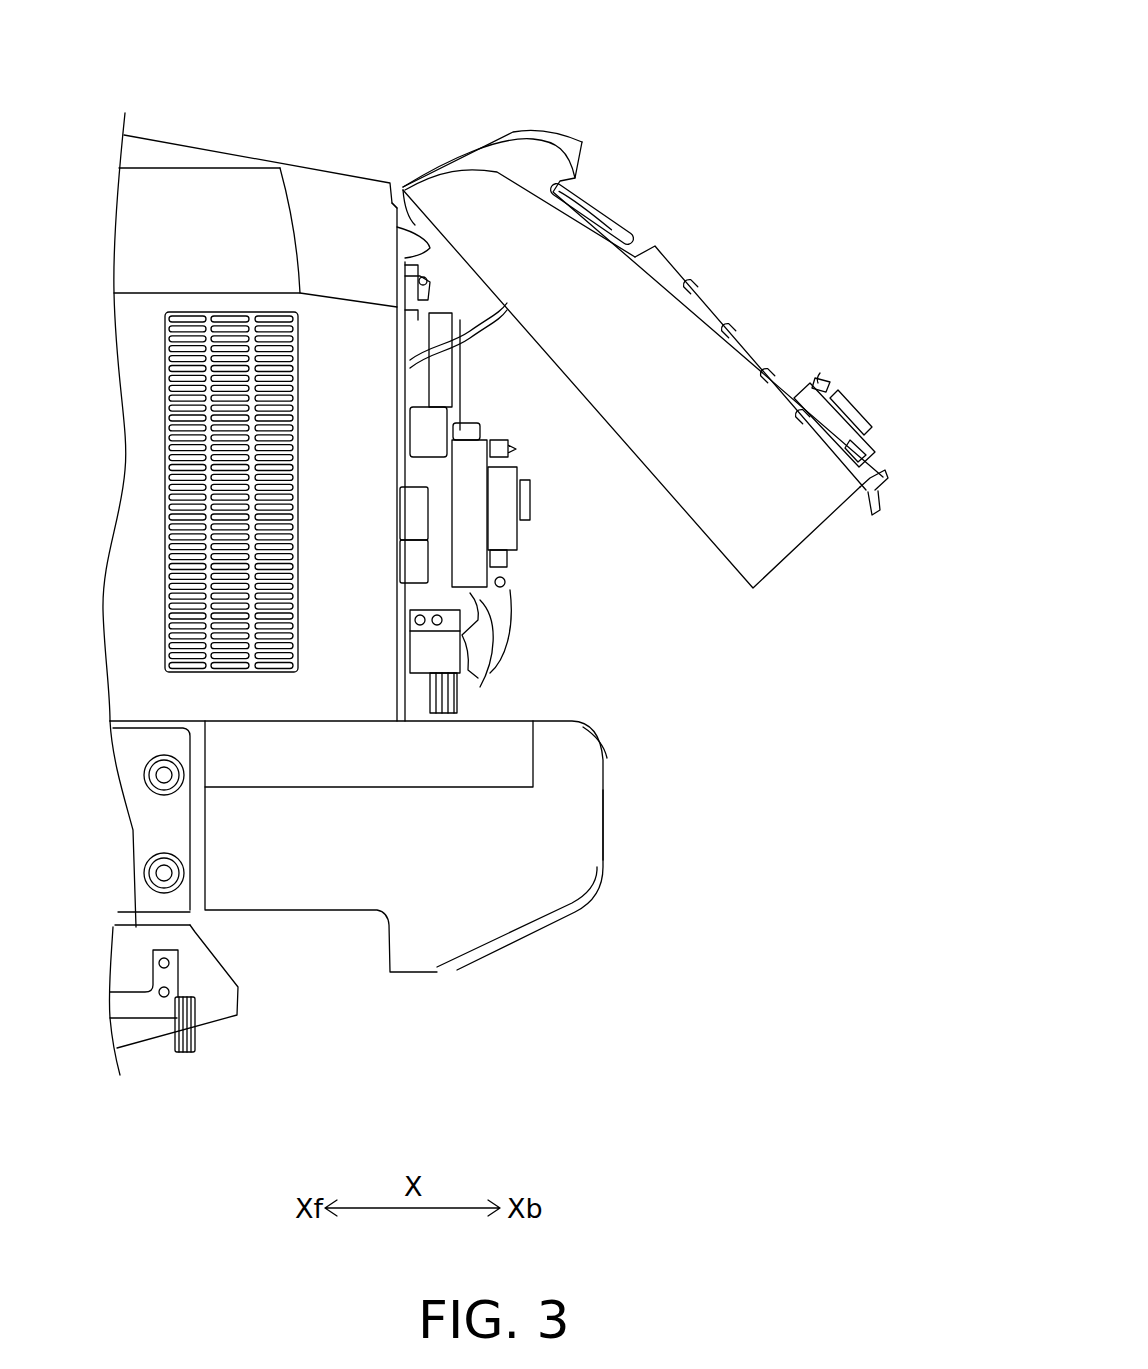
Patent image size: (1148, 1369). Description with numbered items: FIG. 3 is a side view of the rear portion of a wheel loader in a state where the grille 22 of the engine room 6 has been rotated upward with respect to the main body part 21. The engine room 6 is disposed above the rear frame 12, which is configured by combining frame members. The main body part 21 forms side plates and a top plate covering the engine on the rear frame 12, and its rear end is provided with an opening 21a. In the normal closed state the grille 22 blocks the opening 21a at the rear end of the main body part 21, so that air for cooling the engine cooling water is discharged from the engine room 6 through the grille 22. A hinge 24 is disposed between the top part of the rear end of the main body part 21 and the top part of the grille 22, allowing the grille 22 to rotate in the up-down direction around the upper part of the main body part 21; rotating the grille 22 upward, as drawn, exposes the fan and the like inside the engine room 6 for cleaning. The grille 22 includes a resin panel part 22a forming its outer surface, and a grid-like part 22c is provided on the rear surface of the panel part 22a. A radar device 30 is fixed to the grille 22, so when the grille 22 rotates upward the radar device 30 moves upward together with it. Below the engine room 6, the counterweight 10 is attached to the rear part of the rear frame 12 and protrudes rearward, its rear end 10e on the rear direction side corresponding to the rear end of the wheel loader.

The engine room 6 is at (377, 157).
The main body part 21 is at (228, 220).
The opening 21a is at (397, 233).
The hinge 24 is at (423, 170).
The grille 22 is at (528, 162).
The panel part 22a is at (600, 277).
The grid-like part 22c is at (690, 284).
The radar device 30 is at (818, 381).
The counterweight 10 is at (503, 890).
The rear end 10e is at (607, 823).
The rear frame 12 is at (167, 820).